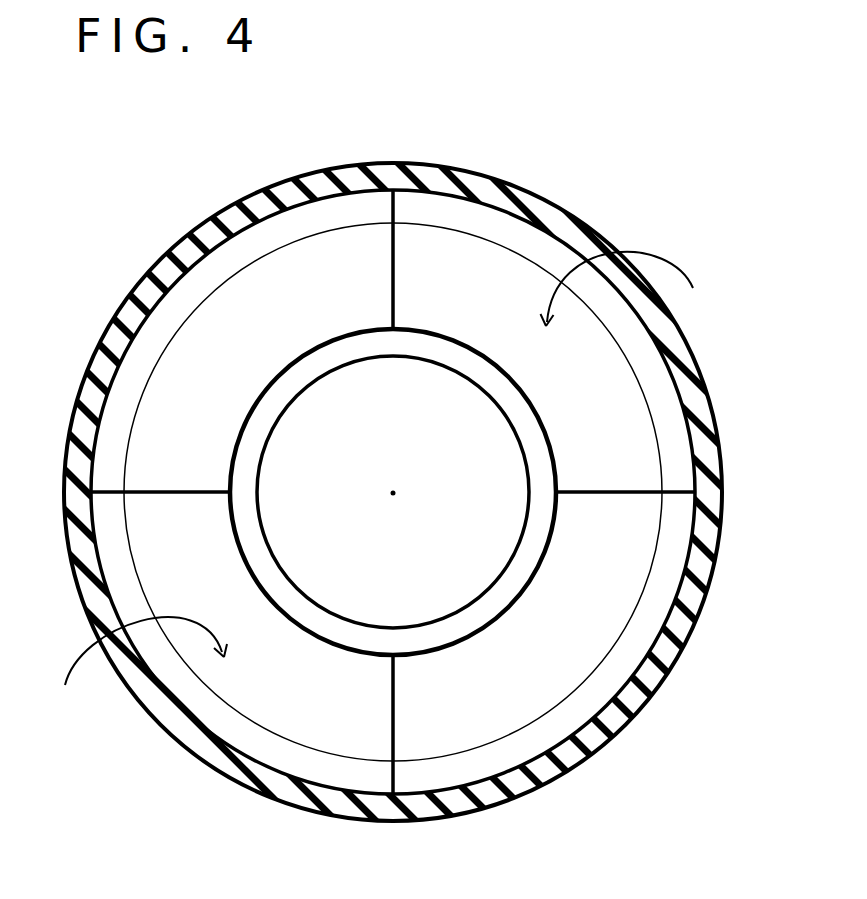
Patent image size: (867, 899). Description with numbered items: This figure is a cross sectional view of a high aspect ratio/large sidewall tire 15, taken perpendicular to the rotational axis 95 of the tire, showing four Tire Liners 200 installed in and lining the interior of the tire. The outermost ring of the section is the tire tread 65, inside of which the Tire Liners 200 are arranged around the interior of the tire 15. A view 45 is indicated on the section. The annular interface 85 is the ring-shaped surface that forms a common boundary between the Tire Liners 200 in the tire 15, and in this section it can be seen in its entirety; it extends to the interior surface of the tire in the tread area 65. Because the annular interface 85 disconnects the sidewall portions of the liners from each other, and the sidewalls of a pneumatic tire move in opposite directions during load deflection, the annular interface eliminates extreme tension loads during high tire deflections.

The high aspect ratio/large sidewall tire 15 is at (330, 373).
The view 45 is at (385, 489).
The tire tread 65 is at (350, 168).
The annular interface 85 is at (233, 255).
The rotational axis 95 is at (389, 494).
The Tire Liners 200 is at (198, 378).